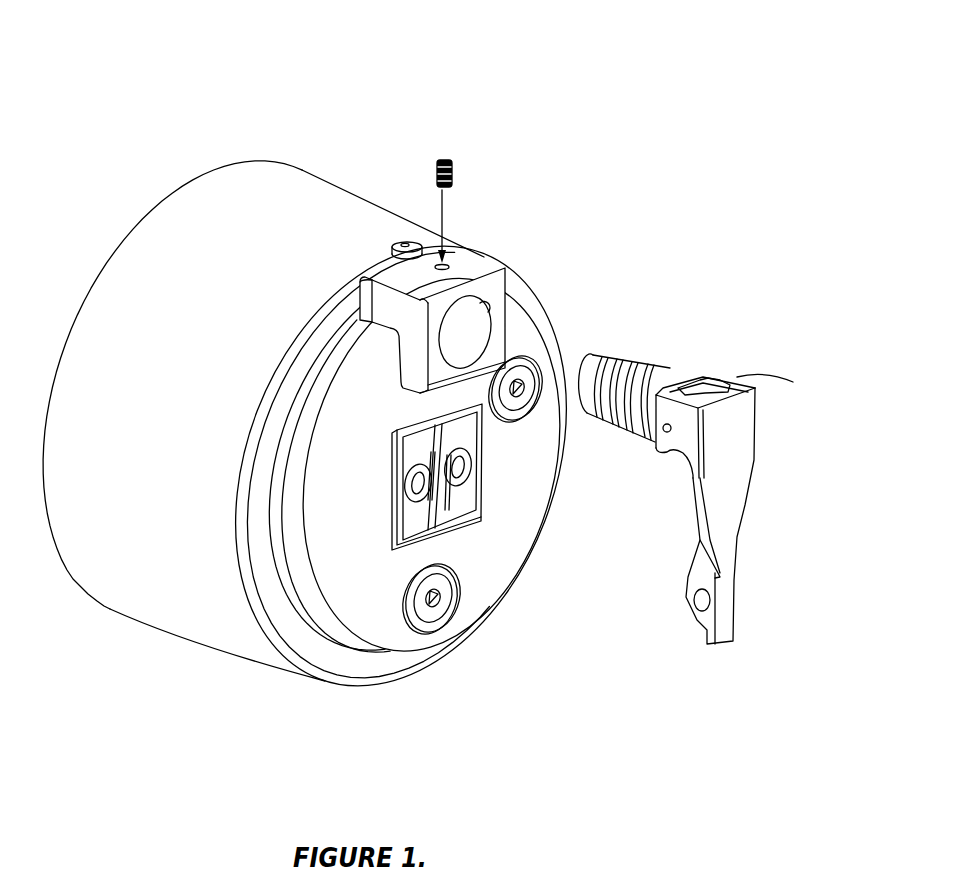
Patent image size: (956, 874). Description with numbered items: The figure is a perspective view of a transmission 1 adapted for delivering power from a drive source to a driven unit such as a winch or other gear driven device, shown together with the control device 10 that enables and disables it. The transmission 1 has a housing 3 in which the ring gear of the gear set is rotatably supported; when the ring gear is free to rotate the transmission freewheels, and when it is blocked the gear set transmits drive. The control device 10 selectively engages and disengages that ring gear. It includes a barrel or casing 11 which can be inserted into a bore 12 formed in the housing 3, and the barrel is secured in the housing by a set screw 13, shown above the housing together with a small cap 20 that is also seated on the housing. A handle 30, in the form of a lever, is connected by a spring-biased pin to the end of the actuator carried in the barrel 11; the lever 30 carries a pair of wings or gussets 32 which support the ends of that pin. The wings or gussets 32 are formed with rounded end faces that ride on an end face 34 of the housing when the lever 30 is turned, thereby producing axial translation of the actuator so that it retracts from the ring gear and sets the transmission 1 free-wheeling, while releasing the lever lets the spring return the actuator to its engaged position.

The transmission 1 is at (334, 370).
The housing 3 is at (334, 450).
The control device 10 is at (663, 396).
The barrel or casing 11 is at (613, 432).
The bore 12 is at (474, 333).
The set screw 13 is at (453, 167).
The cap 20 is at (393, 240).
The handle 30 is at (738, 481).
The wings or gussets 32 is at (728, 378).
The end face 34 is at (498, 294).